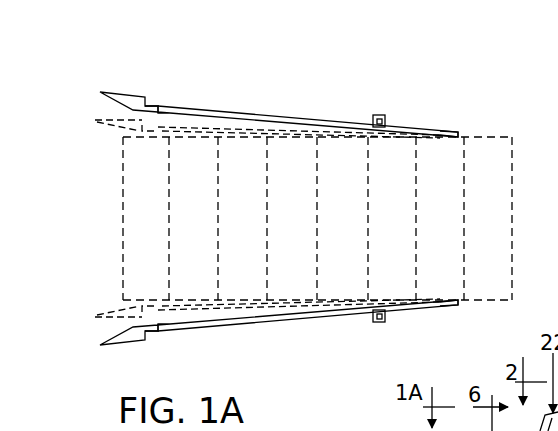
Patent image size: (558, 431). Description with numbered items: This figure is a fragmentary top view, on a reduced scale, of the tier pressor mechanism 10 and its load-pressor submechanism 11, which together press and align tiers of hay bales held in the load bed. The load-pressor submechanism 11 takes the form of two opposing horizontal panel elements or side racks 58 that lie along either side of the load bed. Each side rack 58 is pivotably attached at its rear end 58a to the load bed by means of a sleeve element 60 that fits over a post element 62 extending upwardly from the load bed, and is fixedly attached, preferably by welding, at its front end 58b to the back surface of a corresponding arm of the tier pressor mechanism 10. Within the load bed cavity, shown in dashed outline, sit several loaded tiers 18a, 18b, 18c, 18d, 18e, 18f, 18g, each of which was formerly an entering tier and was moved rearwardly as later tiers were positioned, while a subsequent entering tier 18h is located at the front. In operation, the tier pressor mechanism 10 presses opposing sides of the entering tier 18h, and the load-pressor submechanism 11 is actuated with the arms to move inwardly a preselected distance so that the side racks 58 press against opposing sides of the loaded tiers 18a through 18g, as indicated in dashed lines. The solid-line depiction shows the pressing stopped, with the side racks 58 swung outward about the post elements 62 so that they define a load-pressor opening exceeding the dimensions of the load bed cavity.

The tier pressor mechanism 10 is at (134, 87).
The load-pressor submechanism 11 is at (286, 96).
The side rack 58 is at (233, 104).
The rear end of side rack 58a is at (446, 96).
The front end of side rack 58b is at (200, 68).
The sleeve element 60 is at (373, 117).
The post element 62 is at (385, 114).
The loaded tier 18a is at (497, 137).
The loaded tier 18b is at (463, 136).
The loaded tier 18c is at (394, 298).
The loaded tier 18d is at (346, 298).
The loaded tier 18e is at (294, 298).
The loaded tier 18f is at (248, 298).
The loaded tier 18g is at (195, 298).
The entering tier 18h is at (120, 268).